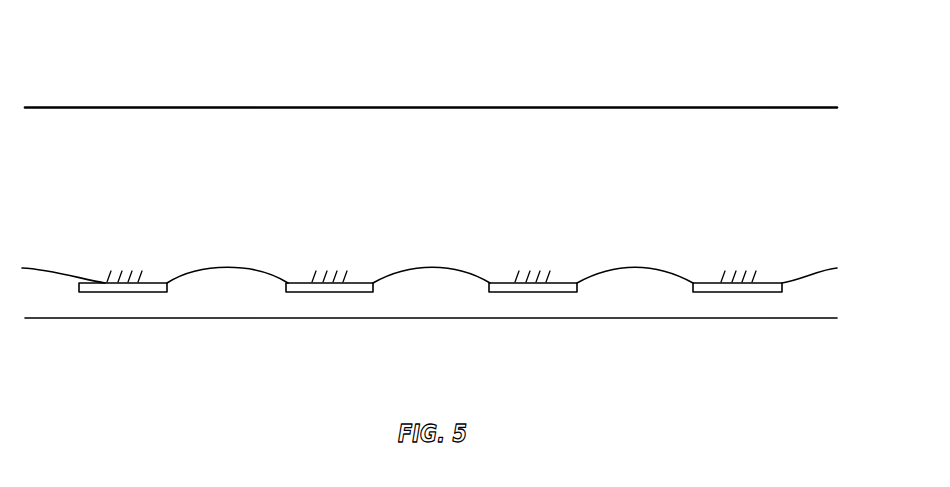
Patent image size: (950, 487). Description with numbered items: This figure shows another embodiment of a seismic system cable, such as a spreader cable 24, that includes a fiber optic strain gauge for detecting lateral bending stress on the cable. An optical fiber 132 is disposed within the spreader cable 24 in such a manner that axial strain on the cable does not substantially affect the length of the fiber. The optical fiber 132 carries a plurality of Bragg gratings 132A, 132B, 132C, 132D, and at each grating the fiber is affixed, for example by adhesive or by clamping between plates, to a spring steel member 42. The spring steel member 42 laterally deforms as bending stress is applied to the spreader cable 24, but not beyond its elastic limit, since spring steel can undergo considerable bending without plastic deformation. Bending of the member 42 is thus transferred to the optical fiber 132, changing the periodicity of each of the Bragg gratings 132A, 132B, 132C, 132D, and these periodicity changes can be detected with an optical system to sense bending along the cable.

The spreader cable 24 is at (466, 59).
The spring steel member 42 is at (123, 287).
The optical fiber 132 is at (837, 268).
The Bragg grating 132A is at (736, 275).
The Bragg grating 132B is at (531, 275).
The Bragg grating 132C is at (326, 275).
The Bragg grating 132D is at (121, 275).